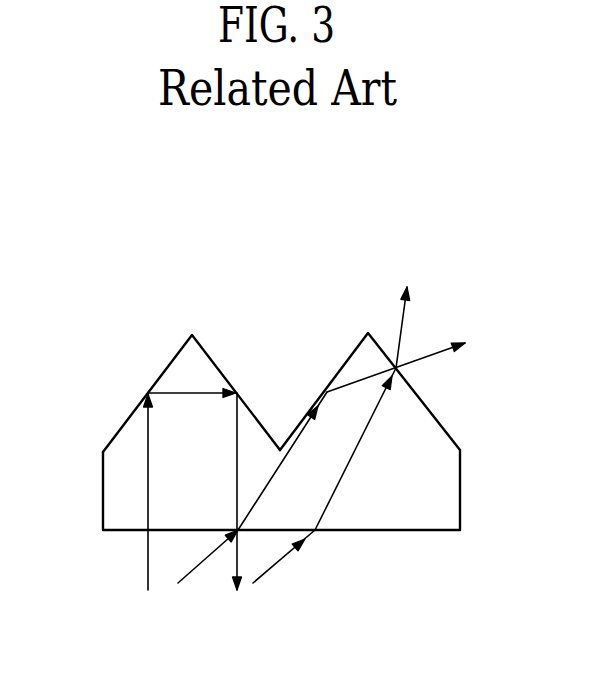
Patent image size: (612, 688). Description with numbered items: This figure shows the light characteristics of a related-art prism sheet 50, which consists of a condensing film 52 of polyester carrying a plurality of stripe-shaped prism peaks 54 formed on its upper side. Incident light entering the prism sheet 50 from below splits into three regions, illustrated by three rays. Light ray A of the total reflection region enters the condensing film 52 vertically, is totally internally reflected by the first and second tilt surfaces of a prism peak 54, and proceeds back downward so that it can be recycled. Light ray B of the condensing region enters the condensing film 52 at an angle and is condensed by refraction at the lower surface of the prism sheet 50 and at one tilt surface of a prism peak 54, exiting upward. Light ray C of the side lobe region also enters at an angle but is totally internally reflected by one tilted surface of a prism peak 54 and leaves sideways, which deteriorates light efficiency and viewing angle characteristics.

The prism sheet 50 is at (48, 267).
The condensing film 52 is at (450, 490).
The prism peaks 54 is at (171, 362).
The light ray A is at (148, 563).
The light ray B is at (403, 321).
The light ray C is at (425, 357).